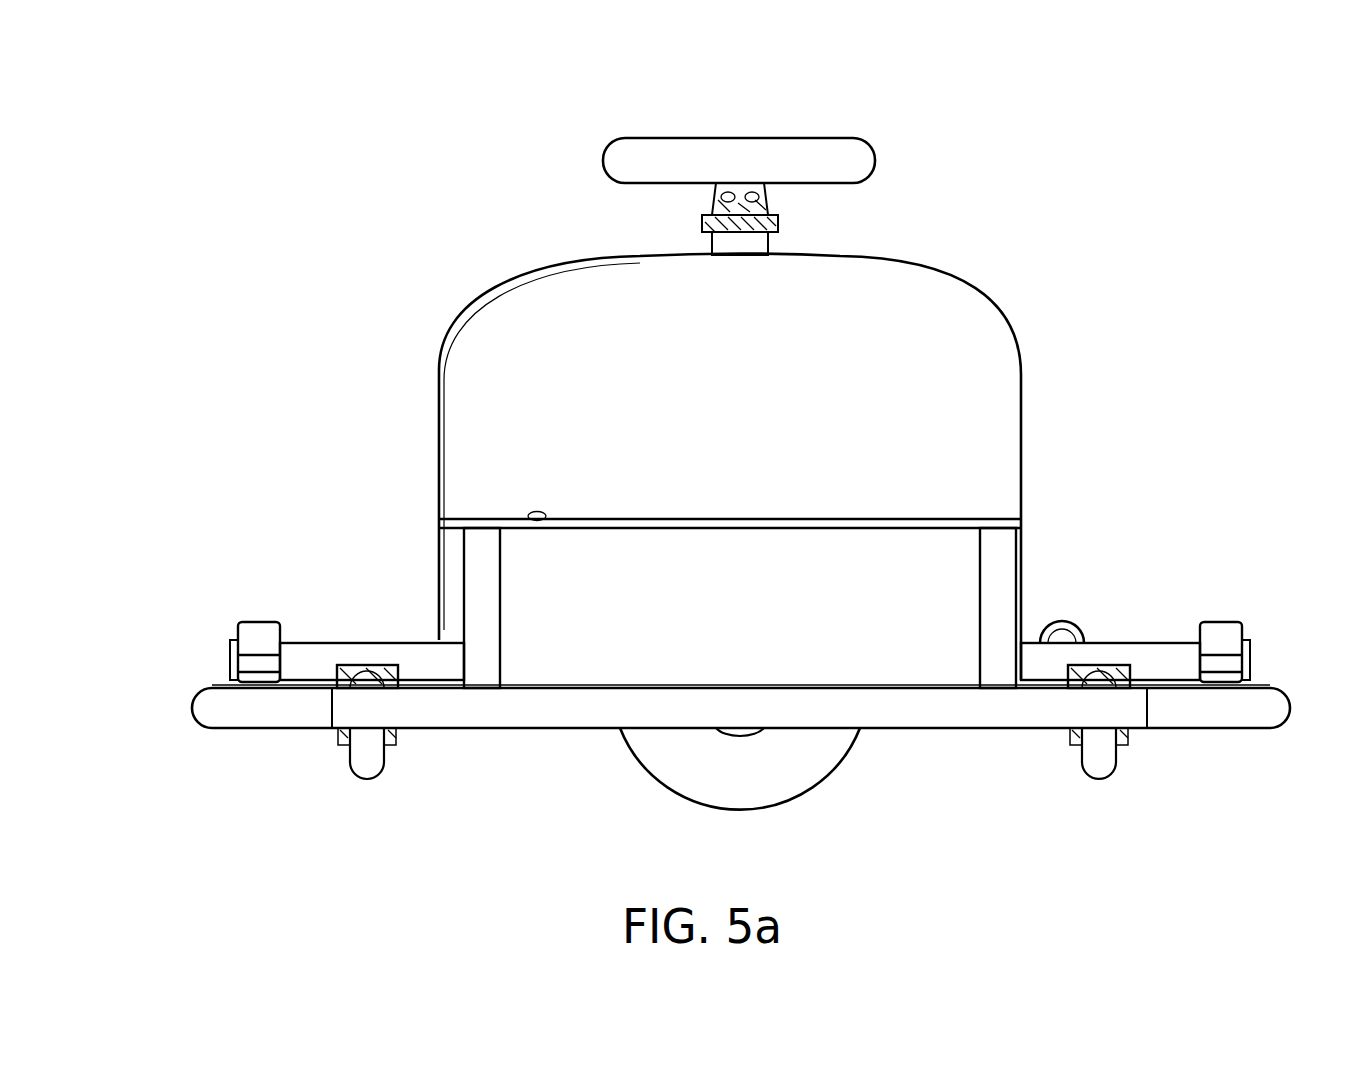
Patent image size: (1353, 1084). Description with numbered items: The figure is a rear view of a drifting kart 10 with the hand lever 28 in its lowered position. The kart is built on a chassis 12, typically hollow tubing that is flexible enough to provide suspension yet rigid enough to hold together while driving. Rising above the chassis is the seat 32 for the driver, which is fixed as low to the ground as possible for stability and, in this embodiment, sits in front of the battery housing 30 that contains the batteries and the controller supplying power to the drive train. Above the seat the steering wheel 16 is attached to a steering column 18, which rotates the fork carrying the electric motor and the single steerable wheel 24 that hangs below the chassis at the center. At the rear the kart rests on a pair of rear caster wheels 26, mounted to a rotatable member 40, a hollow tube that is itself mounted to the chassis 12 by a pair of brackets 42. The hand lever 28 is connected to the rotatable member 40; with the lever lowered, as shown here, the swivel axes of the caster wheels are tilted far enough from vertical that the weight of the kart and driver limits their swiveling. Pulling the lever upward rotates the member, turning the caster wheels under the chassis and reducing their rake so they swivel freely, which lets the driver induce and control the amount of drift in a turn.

The drifting kart 10 is at (327, 213).
The chassis 12 is at (1260, 685).
The steering wheel 16 is at (623, 157).
The steering column 18 is at (780, 215).
The steerable wheel 24 is at (805, 768).
The rear caster wheels 26 is at (363, 757).
The hand lever 28 is at (1080, 620).
The battery housing 30 is at (550, 625).
The seat 32 is at (982, 345).
The rotatable member 40 is at (1130, 640).
The brackets 42 is at (250, 620).